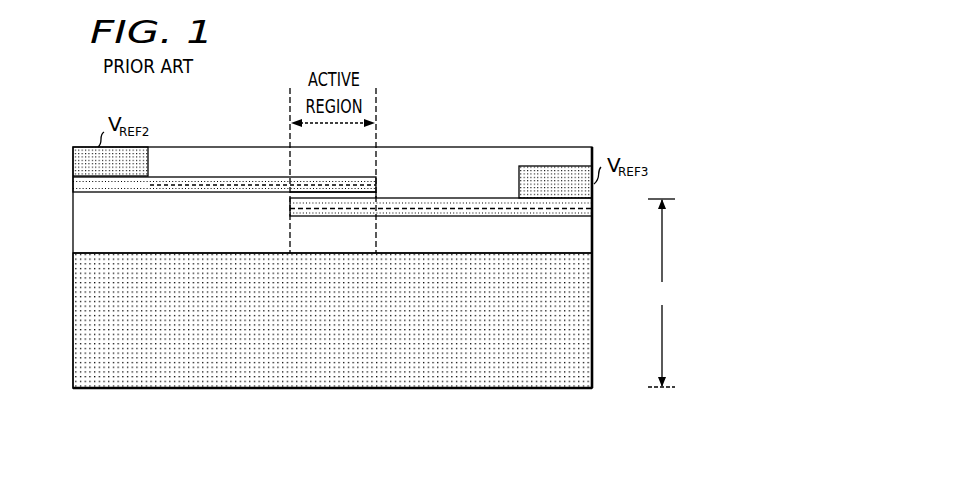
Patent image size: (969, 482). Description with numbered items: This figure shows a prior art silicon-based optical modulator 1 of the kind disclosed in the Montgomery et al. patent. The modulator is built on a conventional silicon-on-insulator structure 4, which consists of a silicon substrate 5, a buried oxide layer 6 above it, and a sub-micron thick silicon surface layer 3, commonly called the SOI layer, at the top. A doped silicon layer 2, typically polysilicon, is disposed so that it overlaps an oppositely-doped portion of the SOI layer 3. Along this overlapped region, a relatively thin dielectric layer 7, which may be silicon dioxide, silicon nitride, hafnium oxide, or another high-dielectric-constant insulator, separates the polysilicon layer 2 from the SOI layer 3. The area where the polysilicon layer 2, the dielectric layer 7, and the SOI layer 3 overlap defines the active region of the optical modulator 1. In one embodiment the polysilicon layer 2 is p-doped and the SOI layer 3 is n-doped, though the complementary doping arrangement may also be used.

The silicon-based optical modulator 1 is at (572, 101).
The doped silicon layer 2 is at (205, 176).
The silicon surface layer 3 is at (594, 207).
The silicon-on-insulator structure 4 is at (655, 302).
The silicon substrate 5 is at (80, 313).
The buried oxide layer 6 is at (80, 219).
The dielectric layer 7 is at (377, 198).